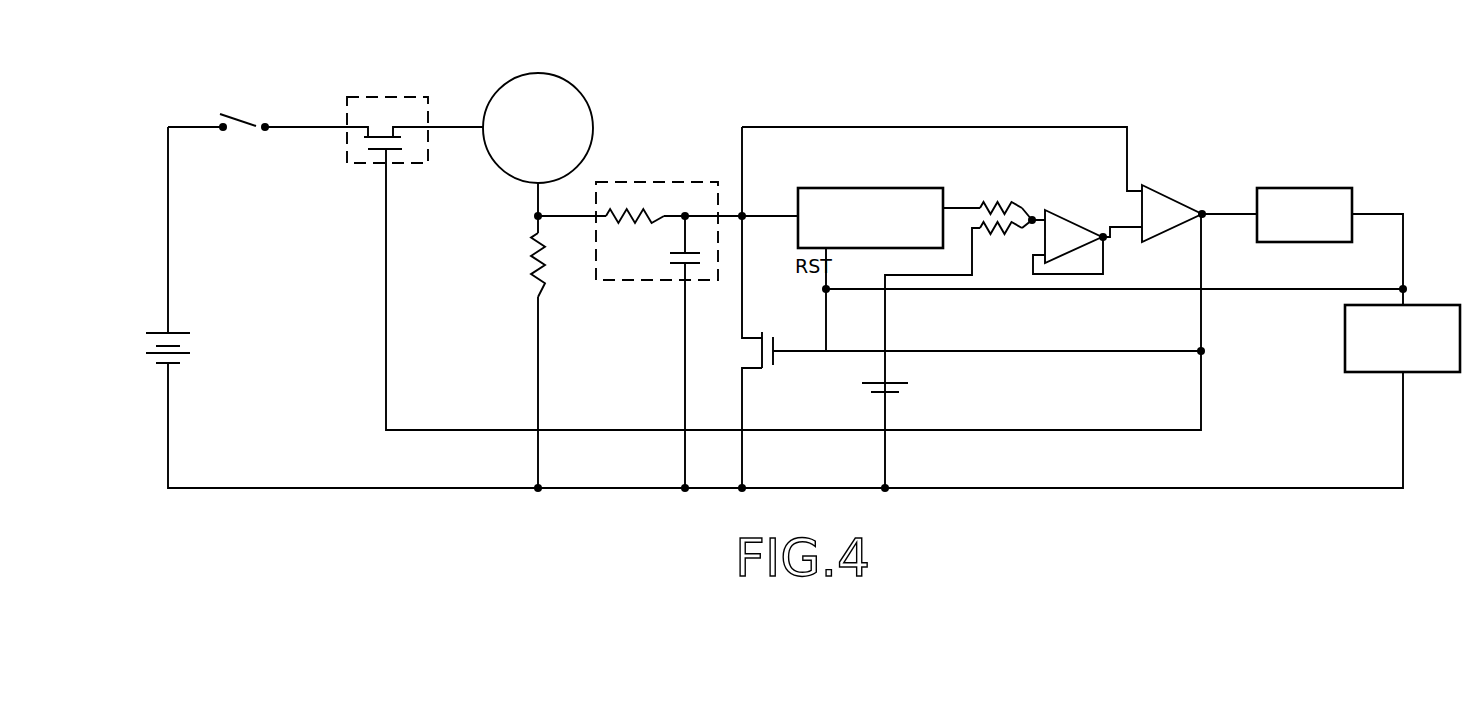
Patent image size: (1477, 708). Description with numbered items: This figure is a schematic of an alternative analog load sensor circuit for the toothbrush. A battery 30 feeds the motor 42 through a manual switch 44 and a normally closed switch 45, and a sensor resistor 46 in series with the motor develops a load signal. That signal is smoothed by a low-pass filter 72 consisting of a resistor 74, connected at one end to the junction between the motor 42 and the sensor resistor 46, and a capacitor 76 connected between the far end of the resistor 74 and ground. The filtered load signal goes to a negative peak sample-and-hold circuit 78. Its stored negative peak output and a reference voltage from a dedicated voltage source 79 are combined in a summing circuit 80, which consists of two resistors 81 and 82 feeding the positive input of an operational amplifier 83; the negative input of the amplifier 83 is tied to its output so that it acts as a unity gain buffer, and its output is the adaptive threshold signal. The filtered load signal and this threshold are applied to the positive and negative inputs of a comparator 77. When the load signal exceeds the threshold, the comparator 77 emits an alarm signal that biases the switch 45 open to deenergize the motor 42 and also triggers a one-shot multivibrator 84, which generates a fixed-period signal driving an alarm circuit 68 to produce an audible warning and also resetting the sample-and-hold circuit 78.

The battery 30 is at (196, 360).
The manual switch 44 is at (245, 140).
The normally closed switch 45 is at (407, 97).
The motor 42 is at (585, 95).
The sensor resistor 46 is at (530, 270).
The low-pass filter 72 is at (645, 182).
The resistor 74 is at (634, 226).
The capacitor 76 is at (675, 265).
The negative peak sample-and-hold circuit 78 is at (900, 188).
The summing circuit 80 is at (763, 368).
The dedicated voltage source 79 is at (914, 388).
The resistor 81 is at (1000, 204).
The resistor 82 is at (1002, 233).
The operational amplifier 83 is at (1075, 225).
The comparator 77 is at (1170, 200).
The one-shot multivibrator 84 is at (1352, 198).
The alarm circuit 68 is at (1345, 320).